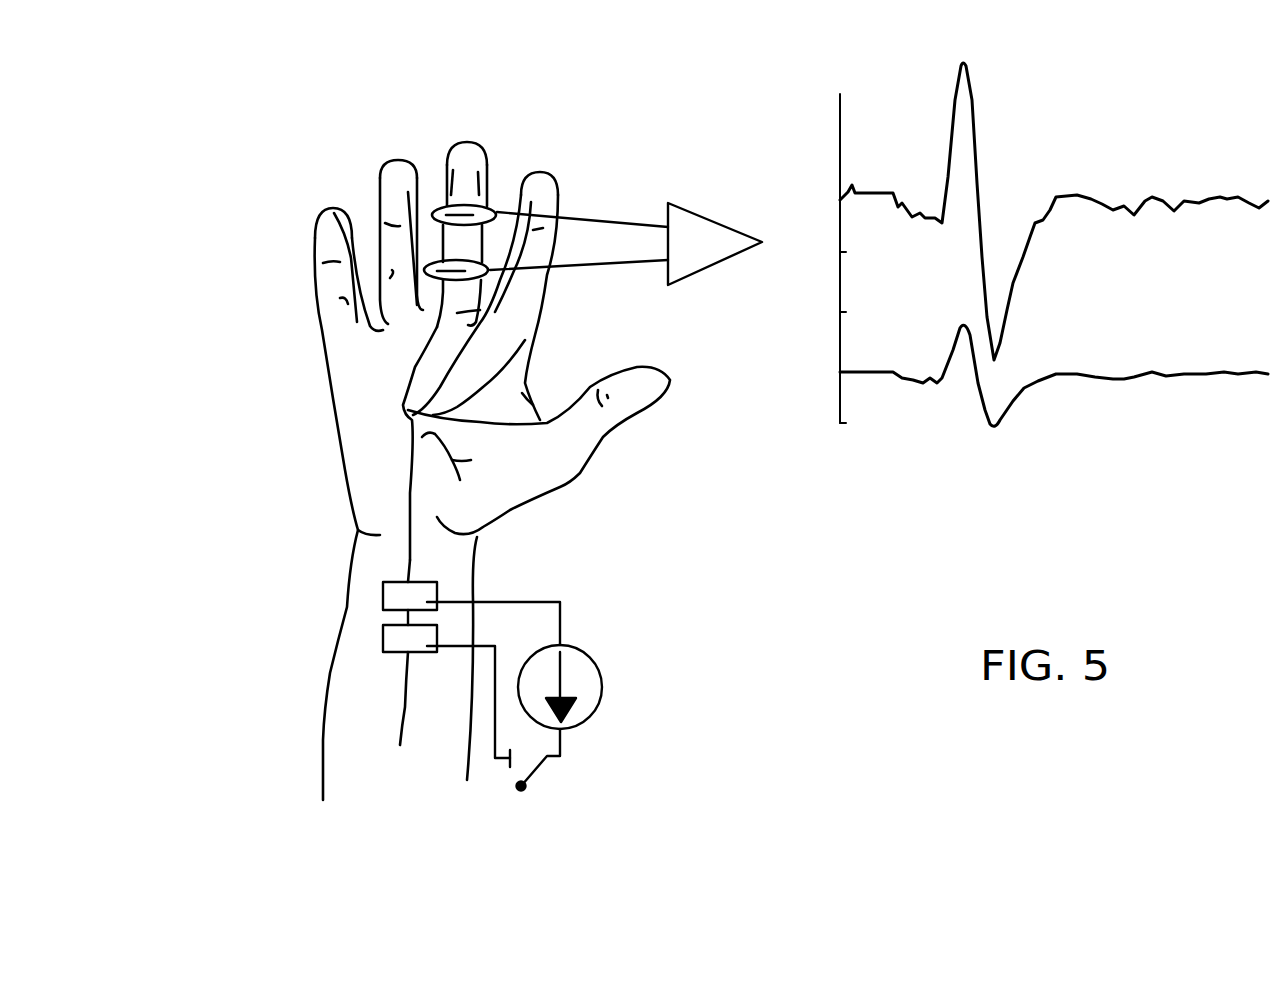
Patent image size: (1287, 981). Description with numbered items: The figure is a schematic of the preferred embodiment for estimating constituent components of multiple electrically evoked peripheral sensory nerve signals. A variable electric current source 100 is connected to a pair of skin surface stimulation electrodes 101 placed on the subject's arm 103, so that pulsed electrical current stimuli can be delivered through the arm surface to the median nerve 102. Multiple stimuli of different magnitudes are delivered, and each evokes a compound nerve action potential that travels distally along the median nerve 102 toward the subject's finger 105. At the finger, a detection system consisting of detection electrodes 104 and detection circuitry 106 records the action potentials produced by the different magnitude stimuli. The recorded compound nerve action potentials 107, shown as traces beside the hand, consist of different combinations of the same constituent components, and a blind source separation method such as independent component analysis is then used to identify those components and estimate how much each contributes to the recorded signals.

The variable electric current source 100 is at (603, 685).
The skin surface stimulation electrodes 101 is at (383, 593).
The median nerve 102 is at (407, 560).
The arm 103 is at (323, 775).
The detection electrodes 104 is at (427, 270).
The finger 105 is at (472, 162).
The detection circuitry 106 is at (728, 226).
The recorded compound nerve action potentials 107 is at (840, 200).